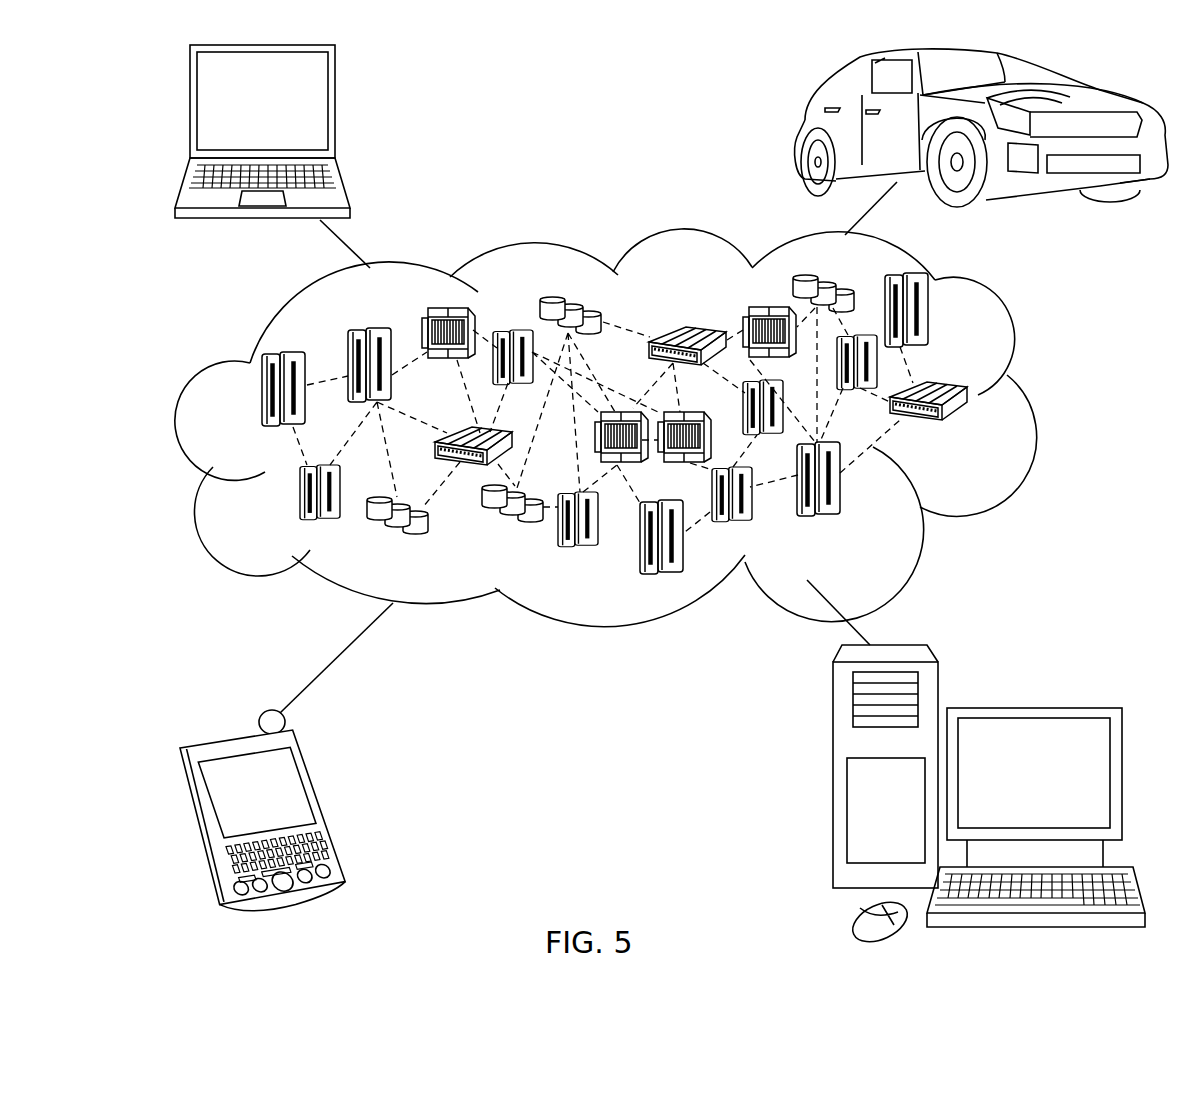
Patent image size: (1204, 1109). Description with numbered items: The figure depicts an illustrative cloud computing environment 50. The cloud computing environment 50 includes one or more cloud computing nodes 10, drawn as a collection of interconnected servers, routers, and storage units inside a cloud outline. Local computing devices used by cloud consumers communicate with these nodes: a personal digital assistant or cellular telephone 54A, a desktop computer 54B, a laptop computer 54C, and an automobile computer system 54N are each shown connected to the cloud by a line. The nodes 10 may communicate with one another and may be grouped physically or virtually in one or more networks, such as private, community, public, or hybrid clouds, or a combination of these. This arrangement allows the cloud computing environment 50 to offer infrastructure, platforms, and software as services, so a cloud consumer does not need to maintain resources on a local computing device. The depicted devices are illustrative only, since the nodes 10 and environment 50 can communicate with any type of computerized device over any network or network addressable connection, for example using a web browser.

The cloud computing node 10 is at (969, 433).
The cloud computing environment 50 is at (1032, 400).
The personal digital assistant or cellular telephone 54A is at (323, 802).
The desktop computer 54B is at (1033, 707).
The laptop computer 54C is at (335, 110).
The automobile computer system 54N is at (802, 127).